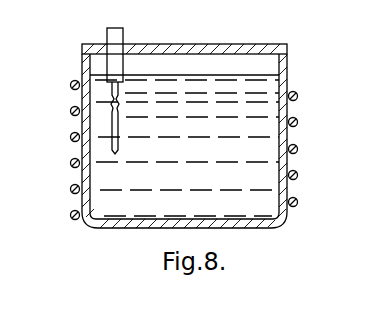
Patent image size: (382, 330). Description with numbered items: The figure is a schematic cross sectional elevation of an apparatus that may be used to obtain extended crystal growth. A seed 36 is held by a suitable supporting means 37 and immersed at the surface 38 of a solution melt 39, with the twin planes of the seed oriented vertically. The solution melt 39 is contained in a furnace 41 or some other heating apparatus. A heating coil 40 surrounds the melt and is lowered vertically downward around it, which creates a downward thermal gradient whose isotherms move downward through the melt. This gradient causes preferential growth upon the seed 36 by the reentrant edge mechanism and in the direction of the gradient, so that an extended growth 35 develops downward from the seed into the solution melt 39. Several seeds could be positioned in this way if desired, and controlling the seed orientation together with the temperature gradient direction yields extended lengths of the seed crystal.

The extended growth 35 is at (112, 112).
The seed 36 is at (118, 90).
The supporting means 37 is at (118, 42).
The surface 38 is at (203, 77).
The solution melt 39 is at (255, 99).
The heating coil 40 is at (72, 82).
The furnace 41 is at (287, 108).